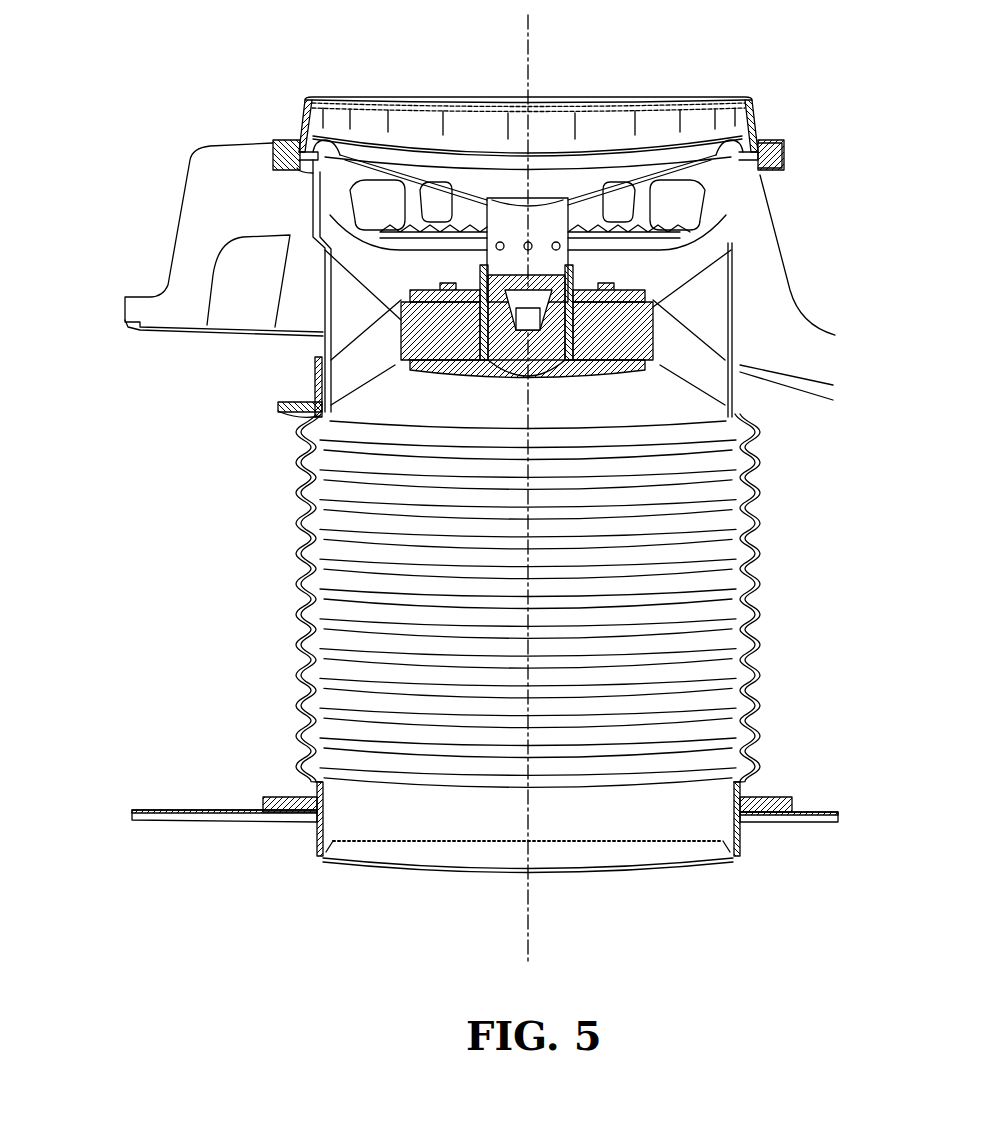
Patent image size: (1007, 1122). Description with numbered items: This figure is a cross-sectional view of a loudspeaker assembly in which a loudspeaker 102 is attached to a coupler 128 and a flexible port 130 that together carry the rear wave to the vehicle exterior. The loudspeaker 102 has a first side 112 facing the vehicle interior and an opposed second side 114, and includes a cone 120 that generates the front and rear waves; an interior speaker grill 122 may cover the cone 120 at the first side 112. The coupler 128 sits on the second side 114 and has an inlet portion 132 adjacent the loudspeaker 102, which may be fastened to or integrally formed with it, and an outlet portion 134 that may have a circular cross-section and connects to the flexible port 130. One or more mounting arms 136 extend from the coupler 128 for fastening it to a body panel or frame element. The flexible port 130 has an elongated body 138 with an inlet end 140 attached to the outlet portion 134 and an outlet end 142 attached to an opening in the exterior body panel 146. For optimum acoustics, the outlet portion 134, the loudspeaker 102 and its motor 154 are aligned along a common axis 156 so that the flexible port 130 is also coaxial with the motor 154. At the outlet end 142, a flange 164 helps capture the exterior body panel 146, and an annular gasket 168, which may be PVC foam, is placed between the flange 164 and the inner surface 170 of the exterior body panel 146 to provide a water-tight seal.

The loudspeaker 102 is at (360, 302).
The first side 112 is at (752, 152).
The second side 114 is at (665, 330).
The cone 120 is at (575, 187).
The interior speaker grill 122 is at (360, 98).
The coupler 128 is at (150, 190).
The flexible port 130 is at (785, 608).
The inlet portion 132 is at (752, 162).
The outlet portion 134 is at (700, 390).
The mounting arm 136 is at (125, 312).
The elongated body 138 is at (300, 575).
The inlet end 140 is at (300, 412).
The outlet end 142 is at (637, 820).
The exterior body panel 146 is at (172, 820).
The motor 154 is at (610, 345).
The common axis 156 is at (545, 962).
The flange 164 is at (770, 797).
The annular gasket 168 is at (795, 813).
The inner surface 170 is at (197, 810).